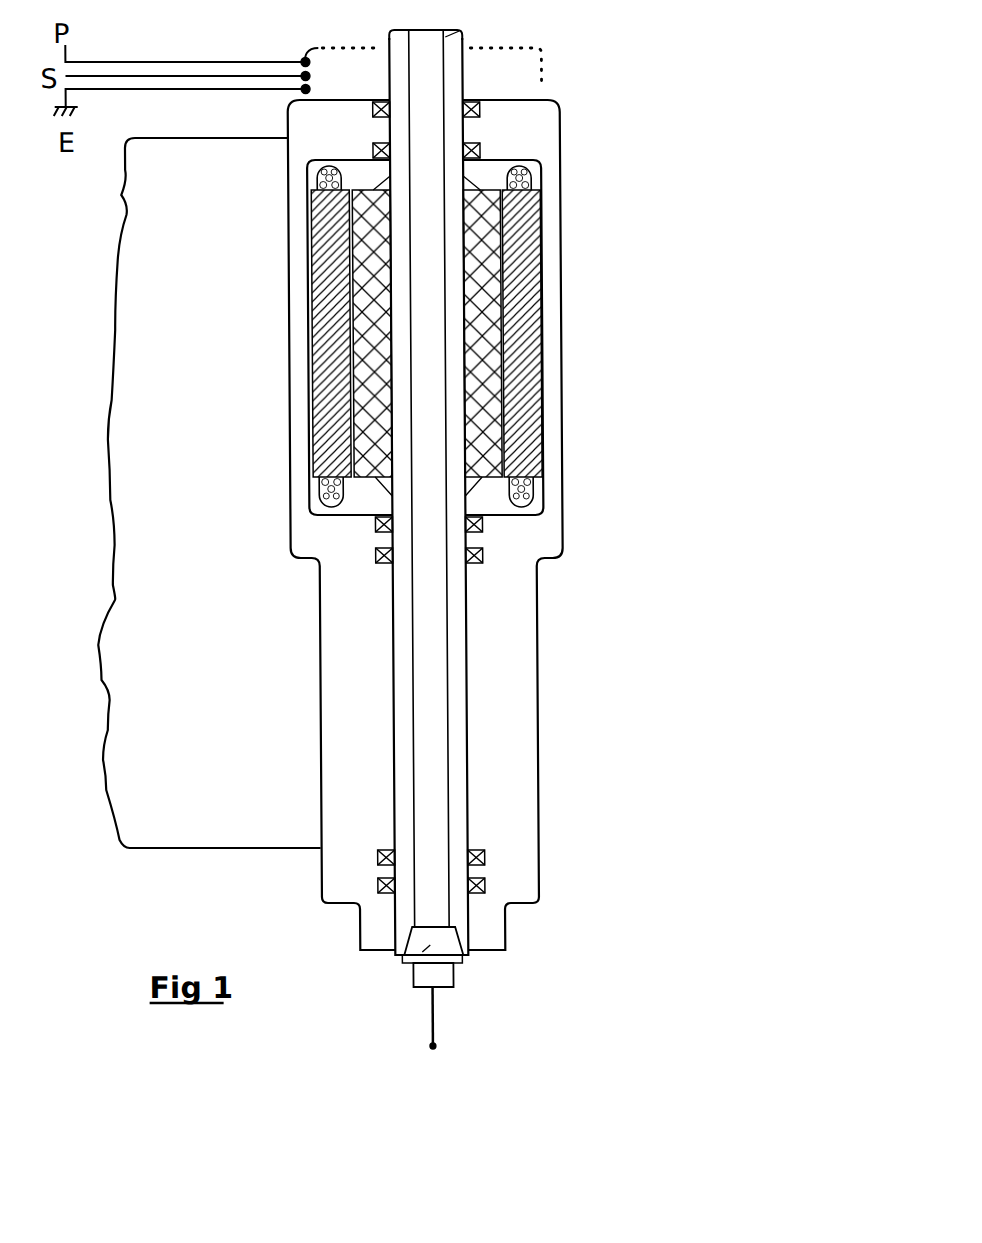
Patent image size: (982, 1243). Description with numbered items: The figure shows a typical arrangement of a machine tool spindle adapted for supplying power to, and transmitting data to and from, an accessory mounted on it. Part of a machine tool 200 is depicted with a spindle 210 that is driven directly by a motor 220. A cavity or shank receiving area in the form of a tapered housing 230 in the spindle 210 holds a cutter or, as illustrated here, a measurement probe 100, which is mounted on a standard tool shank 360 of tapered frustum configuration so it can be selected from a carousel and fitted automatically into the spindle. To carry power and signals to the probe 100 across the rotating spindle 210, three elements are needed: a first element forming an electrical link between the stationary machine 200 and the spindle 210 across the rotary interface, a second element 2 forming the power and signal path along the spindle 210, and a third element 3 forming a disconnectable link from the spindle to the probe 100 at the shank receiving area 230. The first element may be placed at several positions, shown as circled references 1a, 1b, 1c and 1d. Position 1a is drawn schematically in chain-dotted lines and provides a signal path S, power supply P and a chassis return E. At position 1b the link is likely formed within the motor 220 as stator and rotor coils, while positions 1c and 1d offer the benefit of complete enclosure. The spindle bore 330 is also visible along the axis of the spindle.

The first element position 1a is at (492, 68).
The first element position 1b is at (515, 432).
The first element position 1c is at (480, 688).
The first element position 1d is at (486, 920).
The second element 2 is at (450, 780).
The third element 3 is at (458, 963).
The measurement probe 100 is at (420, 973).
The machine tool 200 is at (209, 499).
The spindle 210 is at (462, 32).
The motor 220 is at (513, 310).
The tapered housing 230 is at (451, 933).
The spindle bore 330 is at (420, 718).
The standard tool shank 360 is at (400, 963).